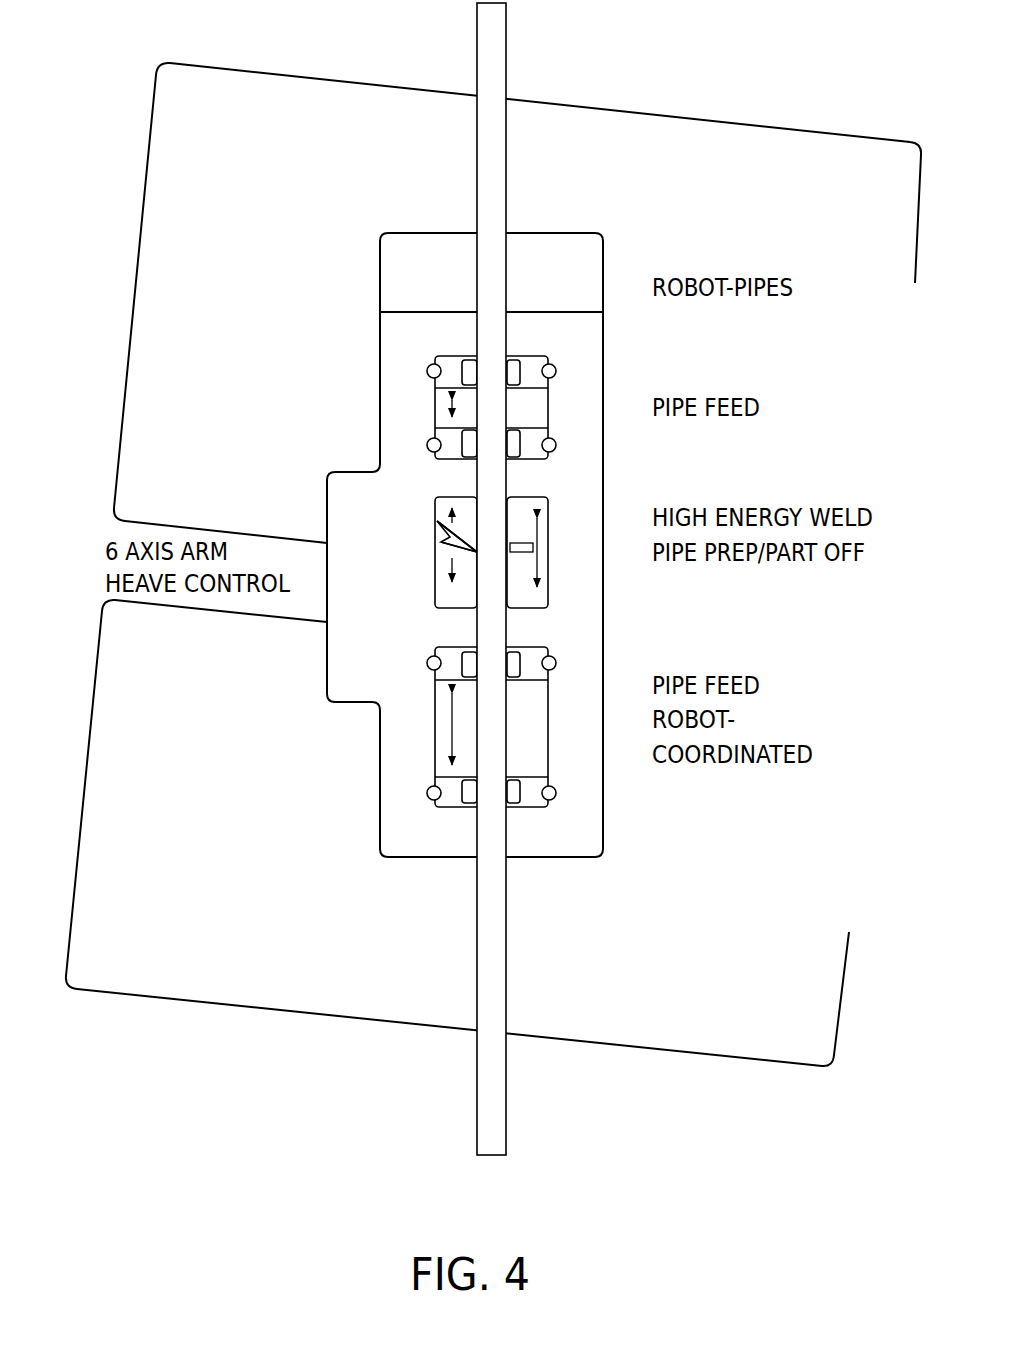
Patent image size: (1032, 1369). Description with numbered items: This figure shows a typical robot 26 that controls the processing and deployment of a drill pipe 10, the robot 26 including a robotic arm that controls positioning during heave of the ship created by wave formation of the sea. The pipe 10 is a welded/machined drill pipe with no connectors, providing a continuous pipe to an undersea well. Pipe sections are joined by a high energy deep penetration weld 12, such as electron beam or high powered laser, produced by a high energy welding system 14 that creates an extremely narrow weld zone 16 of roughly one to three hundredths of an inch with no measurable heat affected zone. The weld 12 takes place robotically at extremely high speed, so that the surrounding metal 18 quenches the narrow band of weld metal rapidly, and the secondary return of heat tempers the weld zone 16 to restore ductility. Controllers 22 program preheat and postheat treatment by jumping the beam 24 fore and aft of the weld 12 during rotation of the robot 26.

The drill pipe 10 is at (485, 978).
The high energy deep penetration weld 12 is at (477, 552).
The high energy welding system 14 is at (446, 540).
The weld zone 16 is at (533, 552).
The surrounding metal 18 is at (533, 545).
The controllers 22 is at (434, 557).
The beam 24 is at (477, 552).
The robot 26 is at (362, 342).